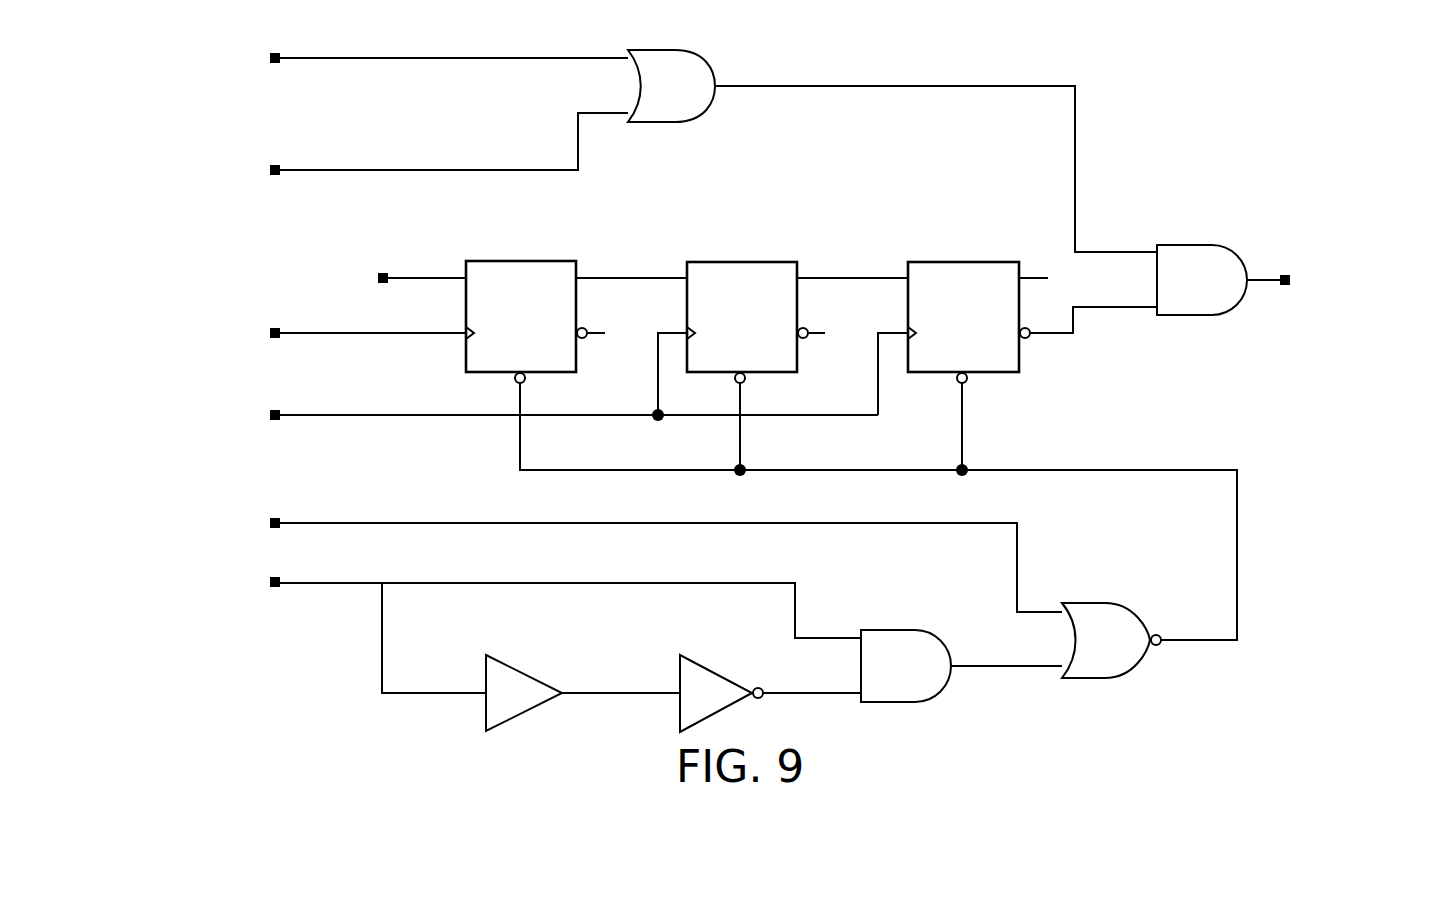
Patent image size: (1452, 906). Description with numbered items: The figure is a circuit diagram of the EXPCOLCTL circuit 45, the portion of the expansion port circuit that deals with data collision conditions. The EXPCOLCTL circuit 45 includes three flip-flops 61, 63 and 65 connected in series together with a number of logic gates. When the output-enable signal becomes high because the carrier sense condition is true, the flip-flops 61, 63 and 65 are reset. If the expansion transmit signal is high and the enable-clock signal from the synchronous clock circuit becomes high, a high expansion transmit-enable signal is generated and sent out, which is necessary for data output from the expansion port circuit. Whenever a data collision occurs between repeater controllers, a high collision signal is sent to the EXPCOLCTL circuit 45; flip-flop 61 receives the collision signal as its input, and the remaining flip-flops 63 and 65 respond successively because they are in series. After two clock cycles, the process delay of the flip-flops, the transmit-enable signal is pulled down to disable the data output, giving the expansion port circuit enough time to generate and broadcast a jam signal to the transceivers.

The EXPCOLCTL circuit 45 is at (1226, 133).
The flip-flop 61 is at (522, 261).
The flip-flop 63 is at (743, 262).
The flip-flop 65 is at (964, 262).